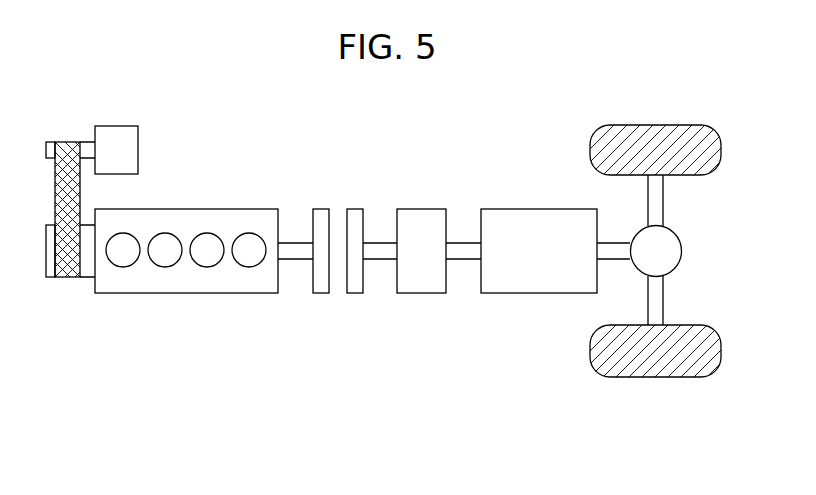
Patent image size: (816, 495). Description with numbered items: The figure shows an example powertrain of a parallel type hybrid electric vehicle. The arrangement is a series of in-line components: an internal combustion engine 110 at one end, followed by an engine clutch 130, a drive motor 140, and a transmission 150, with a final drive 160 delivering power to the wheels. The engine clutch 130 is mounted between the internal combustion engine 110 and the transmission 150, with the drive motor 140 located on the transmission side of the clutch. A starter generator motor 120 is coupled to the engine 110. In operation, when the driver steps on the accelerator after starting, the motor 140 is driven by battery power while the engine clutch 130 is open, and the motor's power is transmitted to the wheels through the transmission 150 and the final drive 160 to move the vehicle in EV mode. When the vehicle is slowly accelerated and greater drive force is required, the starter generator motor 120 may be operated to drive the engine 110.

The internal combustion engine 110 is at (243, 209).
The starter generator motor 120 is at (138, 137).
The engine clutch 130 is at (355, 207).
The drive motor 140 is at (423, 207).
The transmission 150 is at (566, 208).
The final drive 160 is at (682, 240).